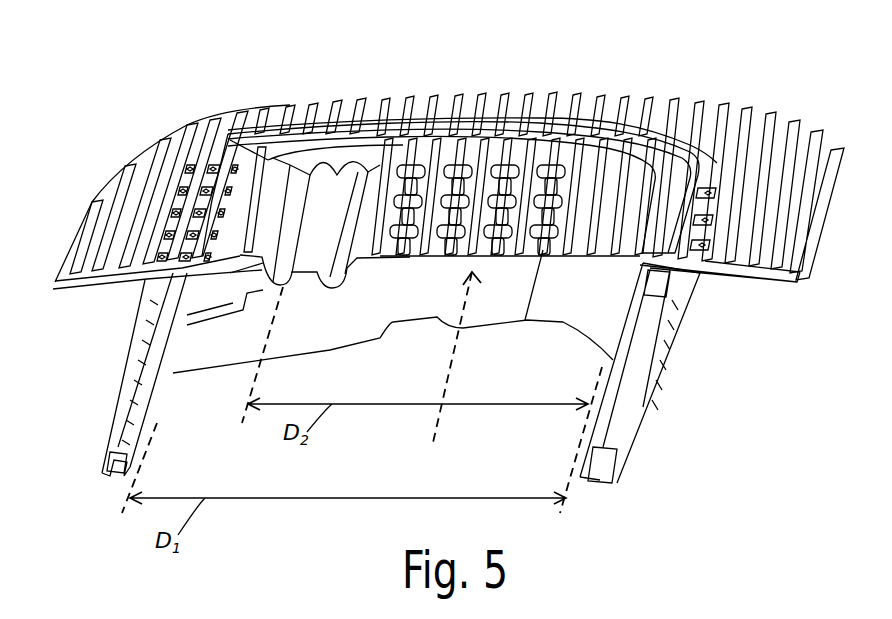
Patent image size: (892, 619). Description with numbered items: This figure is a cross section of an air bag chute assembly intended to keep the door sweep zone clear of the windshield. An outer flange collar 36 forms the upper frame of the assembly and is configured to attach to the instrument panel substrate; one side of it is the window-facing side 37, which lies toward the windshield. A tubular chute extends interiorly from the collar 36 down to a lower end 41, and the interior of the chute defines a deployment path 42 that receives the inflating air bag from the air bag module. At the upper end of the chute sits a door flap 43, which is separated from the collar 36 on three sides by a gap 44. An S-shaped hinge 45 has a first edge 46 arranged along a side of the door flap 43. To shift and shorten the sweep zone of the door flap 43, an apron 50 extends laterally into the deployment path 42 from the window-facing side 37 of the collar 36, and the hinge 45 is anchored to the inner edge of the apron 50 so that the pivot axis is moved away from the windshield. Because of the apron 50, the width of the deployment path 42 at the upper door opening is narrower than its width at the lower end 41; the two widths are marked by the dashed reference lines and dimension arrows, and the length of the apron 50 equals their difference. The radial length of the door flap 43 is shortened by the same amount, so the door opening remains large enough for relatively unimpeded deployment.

The outer flange collar 36 is at (93, 296).
The window-facing side 37 is at (78, 240).
The lower end 41 is at (102, 468).
The deployment path 42 is at (452, 365).
The door flap 43 is at (598, 172).
The gap 44 is at (657, 187).
The S-shaped hinge 45 is at (346, 170).
The first edge 46 is at (378, 172).
The apron 50 is at (241, 187).